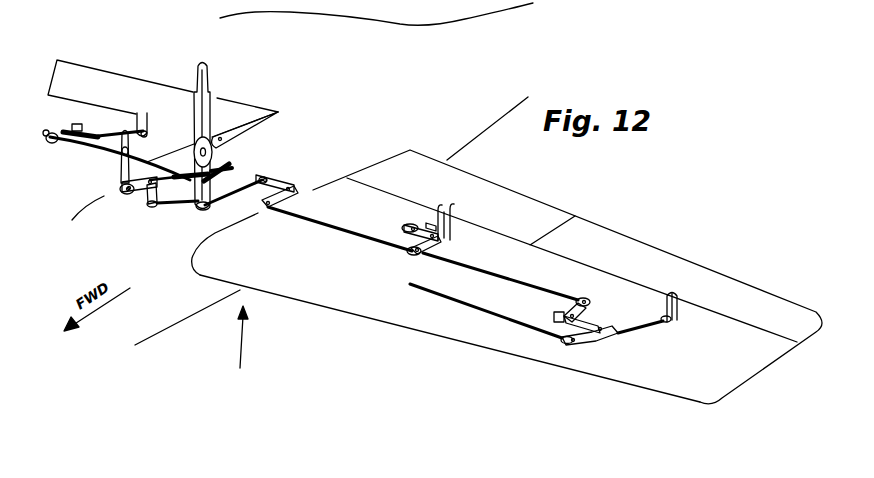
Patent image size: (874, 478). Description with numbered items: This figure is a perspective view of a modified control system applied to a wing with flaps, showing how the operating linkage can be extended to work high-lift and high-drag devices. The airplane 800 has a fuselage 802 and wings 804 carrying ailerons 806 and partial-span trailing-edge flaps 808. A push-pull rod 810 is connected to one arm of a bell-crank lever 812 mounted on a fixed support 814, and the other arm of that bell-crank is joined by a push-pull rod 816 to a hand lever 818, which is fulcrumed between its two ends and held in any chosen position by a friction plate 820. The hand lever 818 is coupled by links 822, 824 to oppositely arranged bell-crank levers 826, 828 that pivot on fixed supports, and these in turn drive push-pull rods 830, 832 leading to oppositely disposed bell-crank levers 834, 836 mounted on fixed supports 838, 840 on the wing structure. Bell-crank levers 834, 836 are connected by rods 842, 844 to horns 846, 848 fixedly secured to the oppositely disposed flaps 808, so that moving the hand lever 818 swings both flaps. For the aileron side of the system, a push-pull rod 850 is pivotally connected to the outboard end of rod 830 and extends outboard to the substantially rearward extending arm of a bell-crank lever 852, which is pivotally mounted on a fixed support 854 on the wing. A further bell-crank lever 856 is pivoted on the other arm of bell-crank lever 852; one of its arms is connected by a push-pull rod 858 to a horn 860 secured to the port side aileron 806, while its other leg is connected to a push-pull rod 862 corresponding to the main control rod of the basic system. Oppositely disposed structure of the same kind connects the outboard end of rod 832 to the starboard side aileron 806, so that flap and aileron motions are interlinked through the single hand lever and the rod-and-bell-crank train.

The airplane 800 is at (242, 347).
The fuselage 802 is at (188, 323).
The wings 804 is at (498, 353).
The ailerons 806 is at (73, 63).
The partial-span trailing-edge flaps 808 is at (153, 83).
The push-pull rod 810 is at (119, 170).
The bell-crank lever 812 is at (135, 200).
The fixed support 814 is at (142, 169).
The push-pull rod 816 is at (178, 203).
The hand lever 818 is at (213, 85).
The friction plate 820 is at (250, 137).
The link 822 is at (245, 191).
The link 824 is at (258, 177).
The bell-crank lever 826 is at (297, 197).
The bell-crank lever 828 is at (221, 163).
The push-pull rod 830 is at (332, 228).
The push-pull rod 832 is at (90, 154).
The bell-crank lever 834 is at (402, 228).
The bell-crank lever 836 is at (125, 147).
The fixed support 838 is at (447, 246).
The fixed support 840 is at (70, 126).
The rod 842 is at (432, 222).
The rod 844 is at (121, 131).
The horn 846 is at (455, 220).
The horn 848 is at (150, 127).
The push-pull rod 850 is at (558, 293).
The bell-crank lever 852 is at (596, 313).
The fixed support 854 is at (556, 313).
The bell-crank lever 856 is at (593, 343).
The push-pull rod 858 is at (643, 334).
The horn 860 is at (682, 309).
The push-pull rod 862 is at (451, 299).